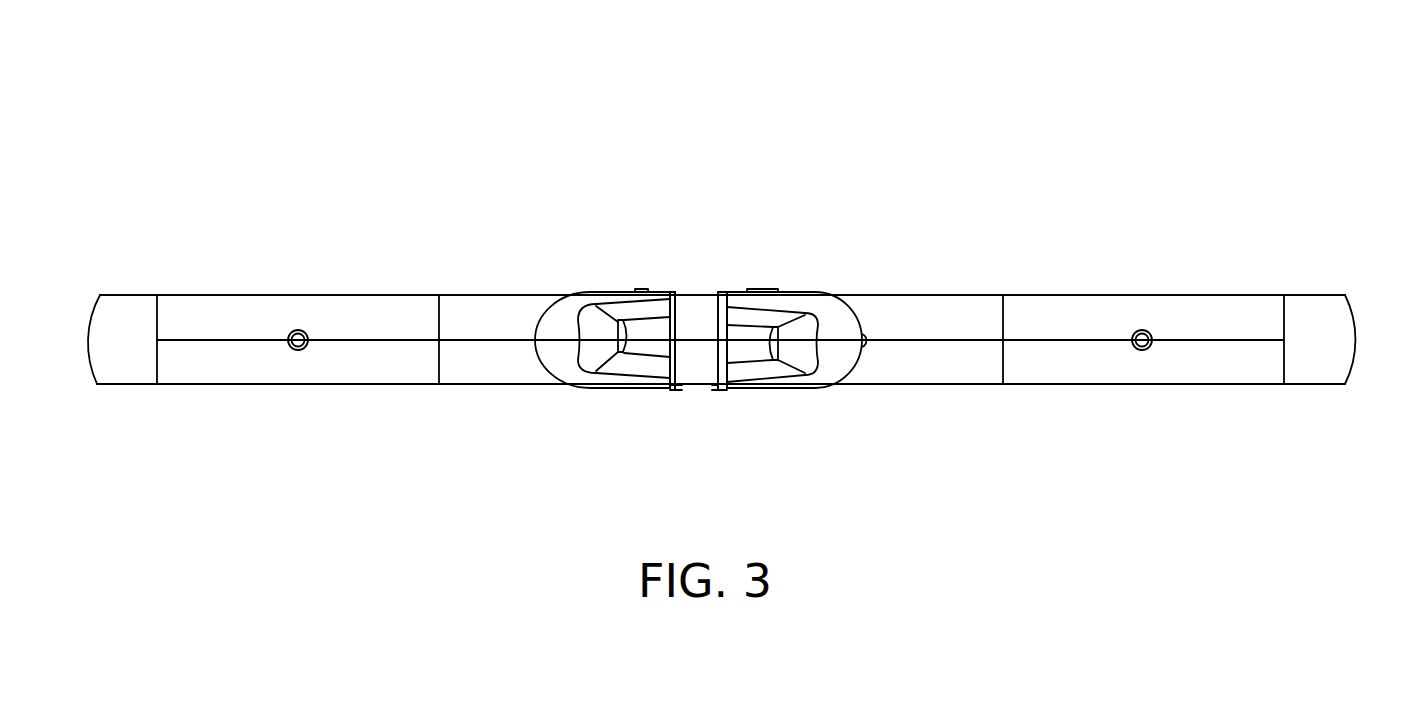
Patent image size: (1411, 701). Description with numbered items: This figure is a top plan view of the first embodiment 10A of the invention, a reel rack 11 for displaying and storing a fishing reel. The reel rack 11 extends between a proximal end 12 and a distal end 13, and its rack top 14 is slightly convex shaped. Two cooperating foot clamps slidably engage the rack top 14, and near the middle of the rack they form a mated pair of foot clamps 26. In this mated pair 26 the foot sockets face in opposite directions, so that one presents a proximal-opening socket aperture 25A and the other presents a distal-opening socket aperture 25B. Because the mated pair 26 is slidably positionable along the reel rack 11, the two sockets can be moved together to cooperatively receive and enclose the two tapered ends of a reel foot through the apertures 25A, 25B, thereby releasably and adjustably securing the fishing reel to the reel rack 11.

The first embodiment 10A is at (1100, 151).
The reel rack 11 is at (1165, 261).
The proximal end 12 is at (1360, 330).
The distal end 13 is at (76, 330).
The rack top 14 is at (388, 315).
The proximal-opening socket aperture 25A is at (677, 369).
The distal-opening socket aperture 25B is at (720, 368).
The mated pair of foot clamps 26 is at (700, 196).